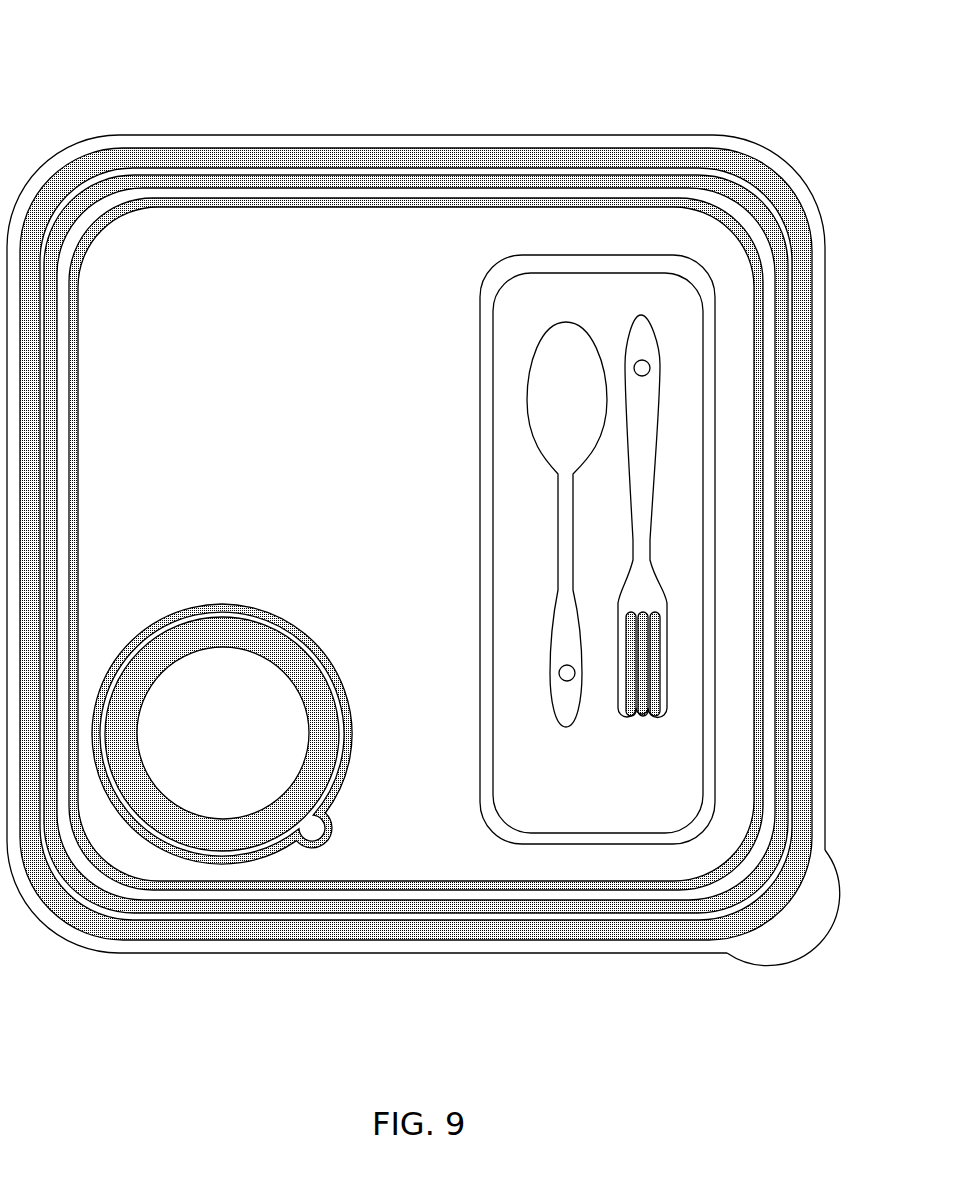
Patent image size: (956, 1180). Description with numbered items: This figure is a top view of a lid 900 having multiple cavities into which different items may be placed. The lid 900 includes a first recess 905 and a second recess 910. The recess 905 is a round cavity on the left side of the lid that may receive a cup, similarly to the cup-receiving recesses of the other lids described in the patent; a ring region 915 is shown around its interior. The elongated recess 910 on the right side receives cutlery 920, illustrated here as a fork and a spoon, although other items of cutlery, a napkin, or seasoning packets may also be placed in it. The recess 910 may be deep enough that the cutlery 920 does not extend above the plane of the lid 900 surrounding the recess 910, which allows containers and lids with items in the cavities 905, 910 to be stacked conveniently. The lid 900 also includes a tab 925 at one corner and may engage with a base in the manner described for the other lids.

The lid 900 is at (148, 80).
The recess 905 is at (233, 601).
The recess 910 is at (476, 360).
The bowl rim 915 is at (300, 668).
The cutlery 920 is at (637, 718).
The tab 925 is at (757, 962).